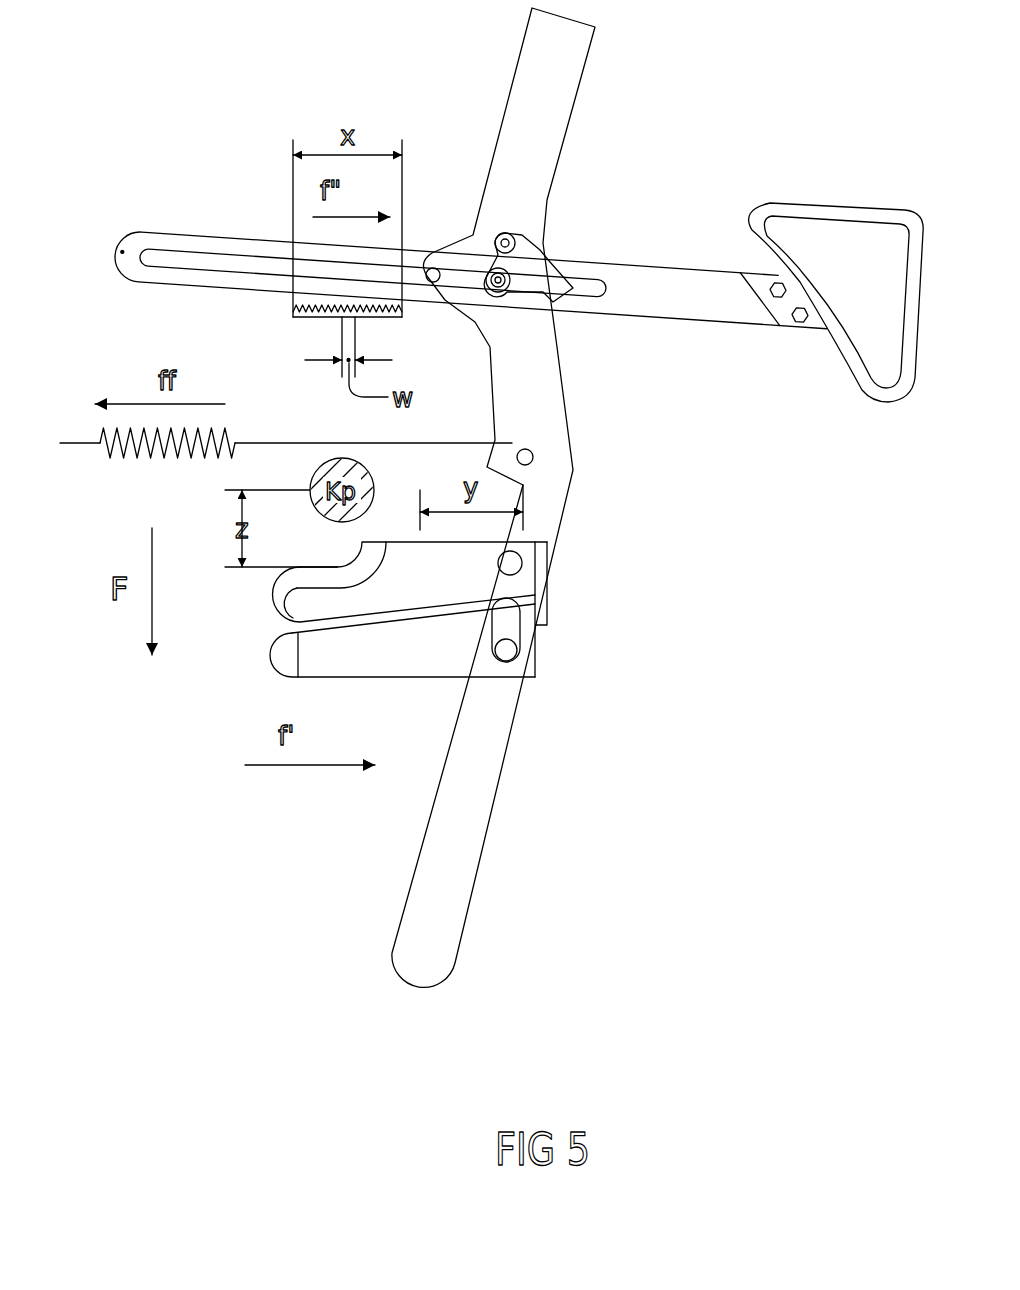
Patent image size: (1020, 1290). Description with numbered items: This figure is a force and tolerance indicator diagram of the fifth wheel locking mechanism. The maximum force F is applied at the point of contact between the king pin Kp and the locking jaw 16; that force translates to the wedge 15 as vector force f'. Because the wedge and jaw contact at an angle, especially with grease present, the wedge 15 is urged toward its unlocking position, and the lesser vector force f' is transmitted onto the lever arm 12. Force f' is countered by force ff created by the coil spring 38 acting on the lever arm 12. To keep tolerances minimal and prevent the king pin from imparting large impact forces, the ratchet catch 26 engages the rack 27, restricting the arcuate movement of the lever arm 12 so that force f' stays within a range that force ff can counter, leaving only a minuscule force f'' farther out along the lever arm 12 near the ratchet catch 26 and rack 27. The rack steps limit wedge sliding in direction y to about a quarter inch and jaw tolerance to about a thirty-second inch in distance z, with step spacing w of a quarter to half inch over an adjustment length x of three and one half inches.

The lever arm 12 is at (517, 722).
The wedge 15 is at (402, 640).
The locking jaw 16 is at (410, 609).
The ratchet catch 26 is at (560, 262).
The rack 27 is at (320, 318).
The coil spring 38 is at (112, 457).